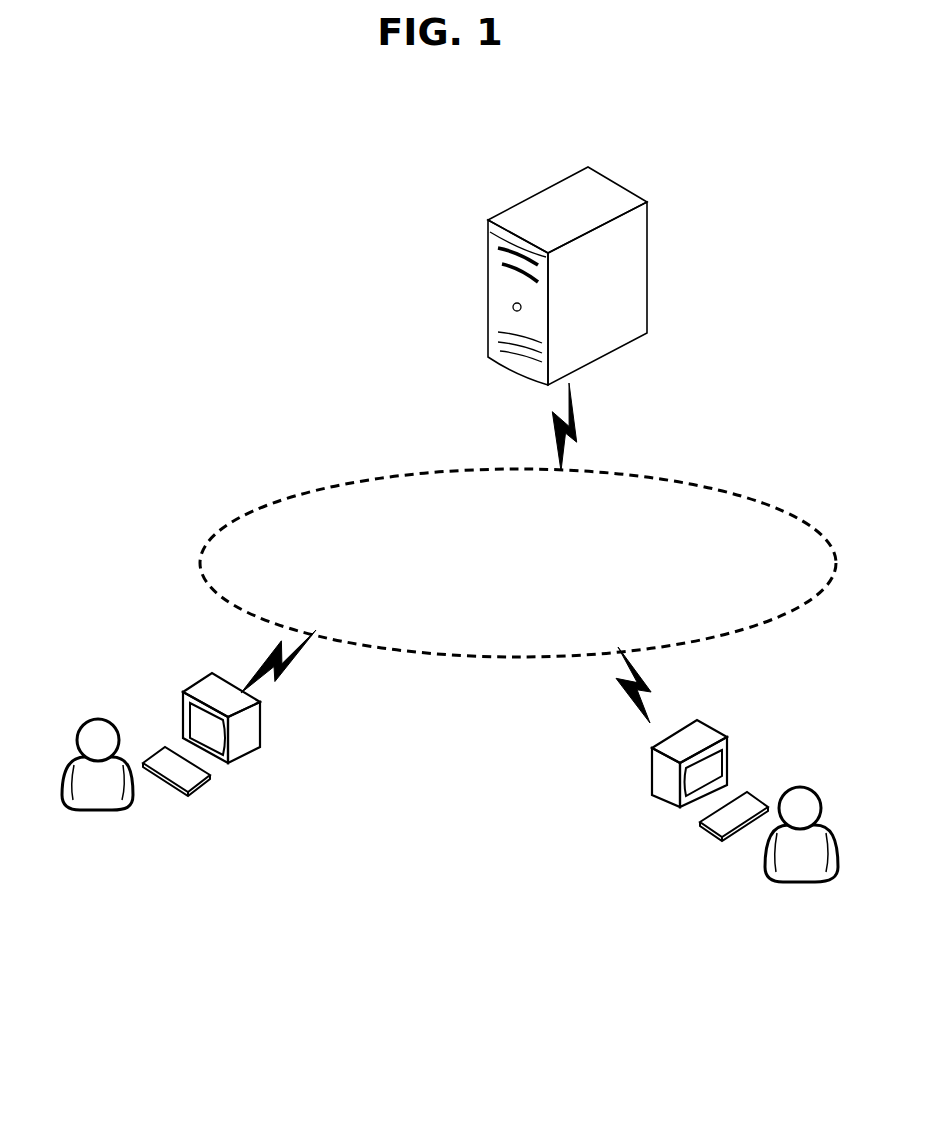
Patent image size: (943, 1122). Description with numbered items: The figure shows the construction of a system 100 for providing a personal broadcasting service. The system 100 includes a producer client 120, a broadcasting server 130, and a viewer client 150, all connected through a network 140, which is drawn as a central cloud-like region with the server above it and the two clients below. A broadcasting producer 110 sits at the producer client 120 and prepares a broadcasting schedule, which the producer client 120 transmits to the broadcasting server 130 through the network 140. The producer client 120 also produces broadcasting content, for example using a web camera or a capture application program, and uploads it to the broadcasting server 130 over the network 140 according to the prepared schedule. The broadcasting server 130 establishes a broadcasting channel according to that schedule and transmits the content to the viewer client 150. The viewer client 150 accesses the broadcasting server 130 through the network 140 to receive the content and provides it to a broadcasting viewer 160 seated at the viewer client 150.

The system for providing a personal broadcasting service 100 is at (202, 160).
The broadcasting producer 110 is at (75, 812).
The producer client 120 is at (228, 763).
The broadcasting server 130 is at (593, 167).
The network 140 is at (518, 563).
The viewer client 150 is at (672, 810).
The broadcasting viewer 160 is at (795, 883).